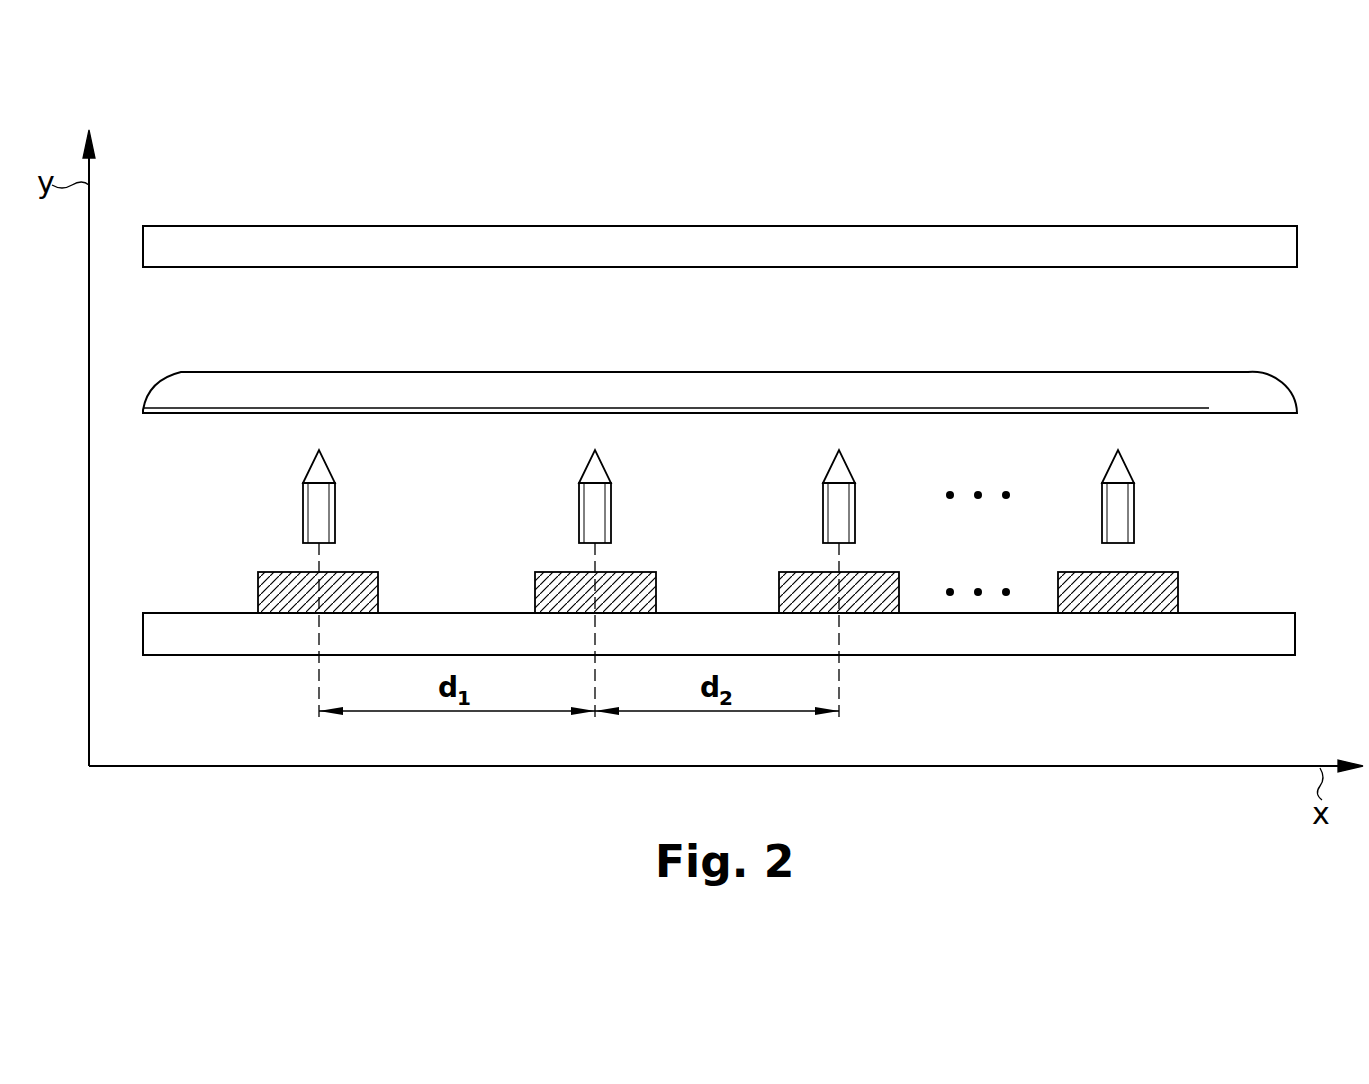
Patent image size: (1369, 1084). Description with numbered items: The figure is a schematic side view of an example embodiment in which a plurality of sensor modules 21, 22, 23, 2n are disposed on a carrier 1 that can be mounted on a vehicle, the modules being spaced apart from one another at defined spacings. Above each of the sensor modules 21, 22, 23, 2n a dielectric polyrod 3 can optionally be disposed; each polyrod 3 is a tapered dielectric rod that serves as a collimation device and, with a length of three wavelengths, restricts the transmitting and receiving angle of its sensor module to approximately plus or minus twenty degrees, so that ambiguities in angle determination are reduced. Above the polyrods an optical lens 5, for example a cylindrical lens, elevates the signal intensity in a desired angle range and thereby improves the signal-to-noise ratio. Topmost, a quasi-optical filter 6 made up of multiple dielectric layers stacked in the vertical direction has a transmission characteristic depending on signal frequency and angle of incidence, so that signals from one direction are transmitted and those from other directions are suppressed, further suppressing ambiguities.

The carrier 1 is at (1283, 633).
The sensor module 21 is at (372, 583).
The sensor module 22 is at (650, 583).
The sensor module 23 is at (896, 583).
The sensor module 2n is at (1172, 583).
The polyrod 3 is at (325, 502).
The optical lens 5 is at (717, 400).
The quasi-optical filter 6 is at (717, 238).